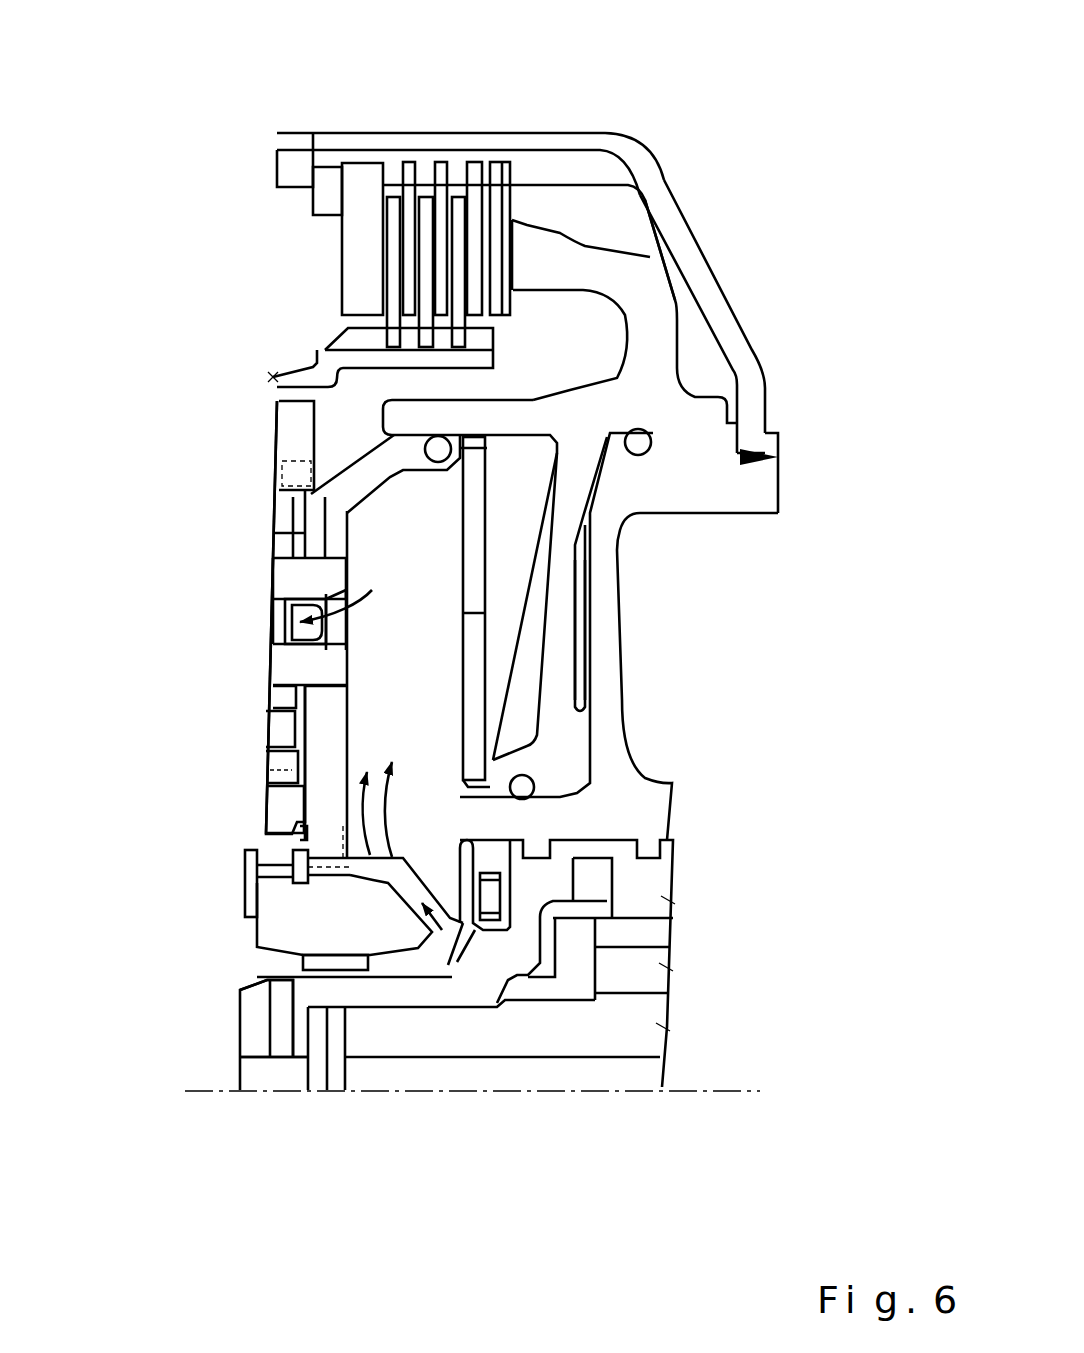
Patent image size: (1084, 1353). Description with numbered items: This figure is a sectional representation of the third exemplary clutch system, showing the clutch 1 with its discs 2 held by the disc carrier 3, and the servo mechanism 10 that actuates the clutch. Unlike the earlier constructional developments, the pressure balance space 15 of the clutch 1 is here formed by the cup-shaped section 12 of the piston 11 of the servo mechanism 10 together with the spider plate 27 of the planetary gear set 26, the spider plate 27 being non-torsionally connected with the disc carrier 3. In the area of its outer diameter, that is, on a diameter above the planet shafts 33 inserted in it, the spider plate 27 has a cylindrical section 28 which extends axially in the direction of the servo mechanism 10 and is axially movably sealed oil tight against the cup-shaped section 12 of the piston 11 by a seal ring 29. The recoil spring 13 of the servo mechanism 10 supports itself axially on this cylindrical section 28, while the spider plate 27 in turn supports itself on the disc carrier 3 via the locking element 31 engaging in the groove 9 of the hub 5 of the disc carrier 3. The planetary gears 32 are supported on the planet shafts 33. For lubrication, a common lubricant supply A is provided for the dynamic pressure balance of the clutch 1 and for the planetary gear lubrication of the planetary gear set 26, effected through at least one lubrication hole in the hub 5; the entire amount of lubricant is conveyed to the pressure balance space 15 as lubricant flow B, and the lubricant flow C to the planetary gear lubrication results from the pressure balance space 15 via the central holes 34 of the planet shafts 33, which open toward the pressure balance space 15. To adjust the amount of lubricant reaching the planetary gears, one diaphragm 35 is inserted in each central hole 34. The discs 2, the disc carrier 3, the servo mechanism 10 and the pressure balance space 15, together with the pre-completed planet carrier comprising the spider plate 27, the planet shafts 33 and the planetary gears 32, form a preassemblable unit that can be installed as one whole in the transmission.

The clutch 1 is at (427, 118).
The discs 2 is at (453, 197).
The disc carrier 3 is at (765, 400).
The hub 5 is at (343, 917).
The groove 9 is at (298, 890).
The servo mechanism 10 is at (662, 293).
The piston 11 is at (637, 387).
The cup-shaped section 12 is at (502, 413).
The recoil spring 13 is at (470, 563).
The pressure balance space 15 is at (430, 587).
The planetary gear set 26 is at (257, 711).
The spider plate 27 is at (333, 717).
The cylindrical section 28 is at (318, 462).
The seal ring 29 is at (425, 449).
The locking element 31 is at (288, 868).
The planetary gears 32 is at (286, 513).
The planet shafts 33 is at (304, 576).
The central holes 34 is at (283, 625).
The diaphragm 35 is at (285, 668).
The common lubricant supply A is at (443, 950).
The lubricant flow B is at (390, 830).
The lubricant flow C is at (367, 607).